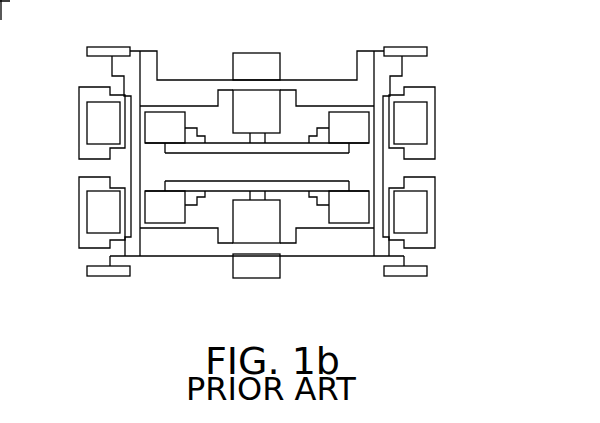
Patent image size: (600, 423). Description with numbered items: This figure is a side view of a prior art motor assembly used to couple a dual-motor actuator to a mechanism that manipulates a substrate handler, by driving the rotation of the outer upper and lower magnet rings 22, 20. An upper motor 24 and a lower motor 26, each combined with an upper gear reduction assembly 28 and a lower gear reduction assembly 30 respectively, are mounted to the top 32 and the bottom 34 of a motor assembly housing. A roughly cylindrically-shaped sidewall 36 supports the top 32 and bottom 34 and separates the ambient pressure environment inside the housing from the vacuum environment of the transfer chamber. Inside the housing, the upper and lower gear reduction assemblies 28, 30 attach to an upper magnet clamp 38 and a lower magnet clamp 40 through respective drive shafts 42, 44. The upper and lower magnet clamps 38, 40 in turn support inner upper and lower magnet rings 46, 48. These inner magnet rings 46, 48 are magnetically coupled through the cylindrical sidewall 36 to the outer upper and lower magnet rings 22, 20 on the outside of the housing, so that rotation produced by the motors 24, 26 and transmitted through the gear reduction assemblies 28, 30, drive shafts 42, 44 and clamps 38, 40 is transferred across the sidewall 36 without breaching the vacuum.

The lower magnet ring 20 is at (79, 226).
The upper magnet ring 22 is at (79, 108).
The upper motor 24 is at (265, 53).
The lower motor 26 is at (252, 278).
The upper gear reduction assembly 28 is at (233, 103).
The lower gear reduction assembly 30 is at (233, 235).
The top 32 is at (283, 86).
The bottom 34 is at (307, 256).
The cylindrically-shaped sidewall 36 is at (128, 160).
The upper magnet clamp 38 is at (293, 142).
The lower magnet clamp 40 is at (221, 189).
The drive shaft 42 is at (247, 141).
The drive shaft 44 is at (267, 198).
The upper magnet ring 46 is at (165, 111).
The lower magnet ring 48 is at (165, 224).